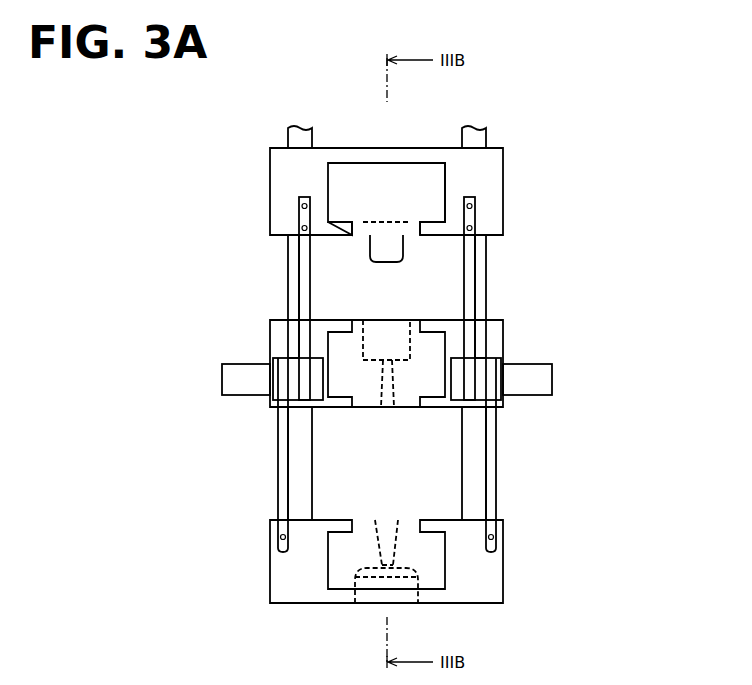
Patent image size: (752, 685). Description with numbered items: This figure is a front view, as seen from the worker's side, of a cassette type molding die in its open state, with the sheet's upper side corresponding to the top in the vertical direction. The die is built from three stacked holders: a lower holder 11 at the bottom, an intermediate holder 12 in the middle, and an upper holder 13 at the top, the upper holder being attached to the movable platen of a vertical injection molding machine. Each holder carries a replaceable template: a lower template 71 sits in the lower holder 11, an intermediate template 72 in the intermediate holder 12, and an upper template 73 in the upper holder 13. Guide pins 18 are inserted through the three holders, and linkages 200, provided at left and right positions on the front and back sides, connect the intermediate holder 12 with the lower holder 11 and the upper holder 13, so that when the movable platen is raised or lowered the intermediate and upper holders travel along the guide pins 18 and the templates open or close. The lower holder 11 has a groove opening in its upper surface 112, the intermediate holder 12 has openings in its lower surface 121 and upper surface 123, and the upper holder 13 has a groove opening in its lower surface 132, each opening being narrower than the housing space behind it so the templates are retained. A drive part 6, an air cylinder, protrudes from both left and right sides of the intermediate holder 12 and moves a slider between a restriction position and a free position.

The linkage 200 is at (519, 343).
The lower holder 11 is at (293, 568).
The intermediate holder 12 is at (287, 341).
The upper holder 13 is at (285, 186).
The guide pin 18 is at (302, 137).
The drive part 6 is at (241, 383).
The lower template 71 is at (408, 542).
The intermediate template 72 is at (390, 348).
The upper template 73 is at (417, 180).
The upper surface of the lower holder 112 is at (329, 520).
The lower surface of the intermediate holder 121 is at (450, 412).
The upper surface of the intermediate holder 123 is at (329, 320).
The lower surface of the upper holder 132 is at (451, 237).